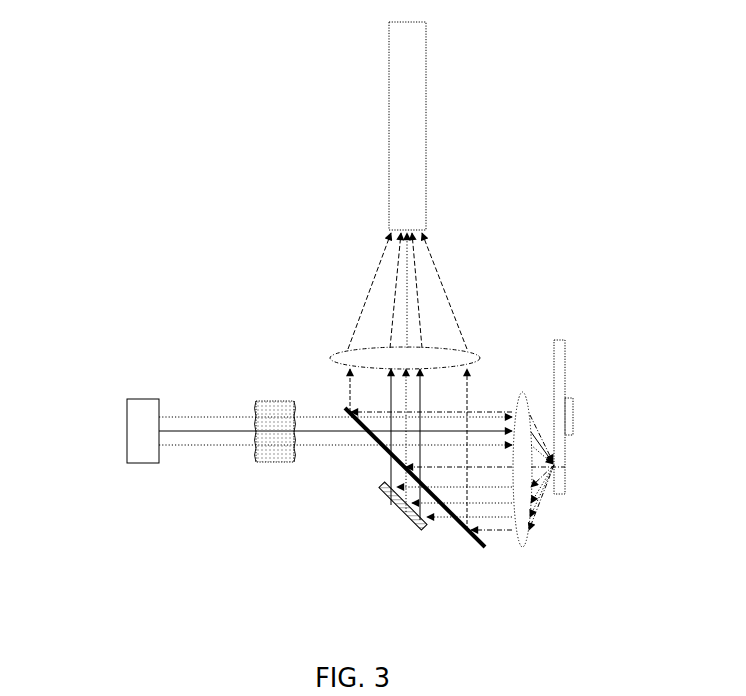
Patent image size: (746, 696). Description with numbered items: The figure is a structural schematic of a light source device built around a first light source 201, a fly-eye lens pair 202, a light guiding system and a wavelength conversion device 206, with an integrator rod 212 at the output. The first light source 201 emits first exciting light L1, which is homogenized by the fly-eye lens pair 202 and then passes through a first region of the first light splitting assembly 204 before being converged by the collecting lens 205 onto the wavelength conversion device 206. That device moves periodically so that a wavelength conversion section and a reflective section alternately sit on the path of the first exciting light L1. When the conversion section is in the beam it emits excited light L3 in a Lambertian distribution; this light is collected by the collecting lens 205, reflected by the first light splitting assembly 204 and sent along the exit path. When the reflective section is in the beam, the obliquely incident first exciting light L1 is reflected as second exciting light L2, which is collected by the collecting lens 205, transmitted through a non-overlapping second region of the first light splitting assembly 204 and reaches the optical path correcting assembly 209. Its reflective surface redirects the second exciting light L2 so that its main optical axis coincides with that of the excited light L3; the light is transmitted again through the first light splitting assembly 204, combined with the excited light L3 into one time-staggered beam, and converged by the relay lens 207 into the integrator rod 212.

The first light source 201 is at (126, 413).
The fly-eye lens pair 202 is at (258, 407).
The first light splitting assembly 204 is at (457, 523).
The collecting lens 205 is at (513, 512).
The wavelength conversion device 206 is at (567, 378).
The relay lens 207 is at (480, 353).
The optical path correcting assembly 209 is at (402, 512).
The integrator rod 212 is at (389, 135).
The first exciting light L1 is at (200, 446).
The second exciting light L2 is at (388, 477).
The excited light L3 is at (440, 283).